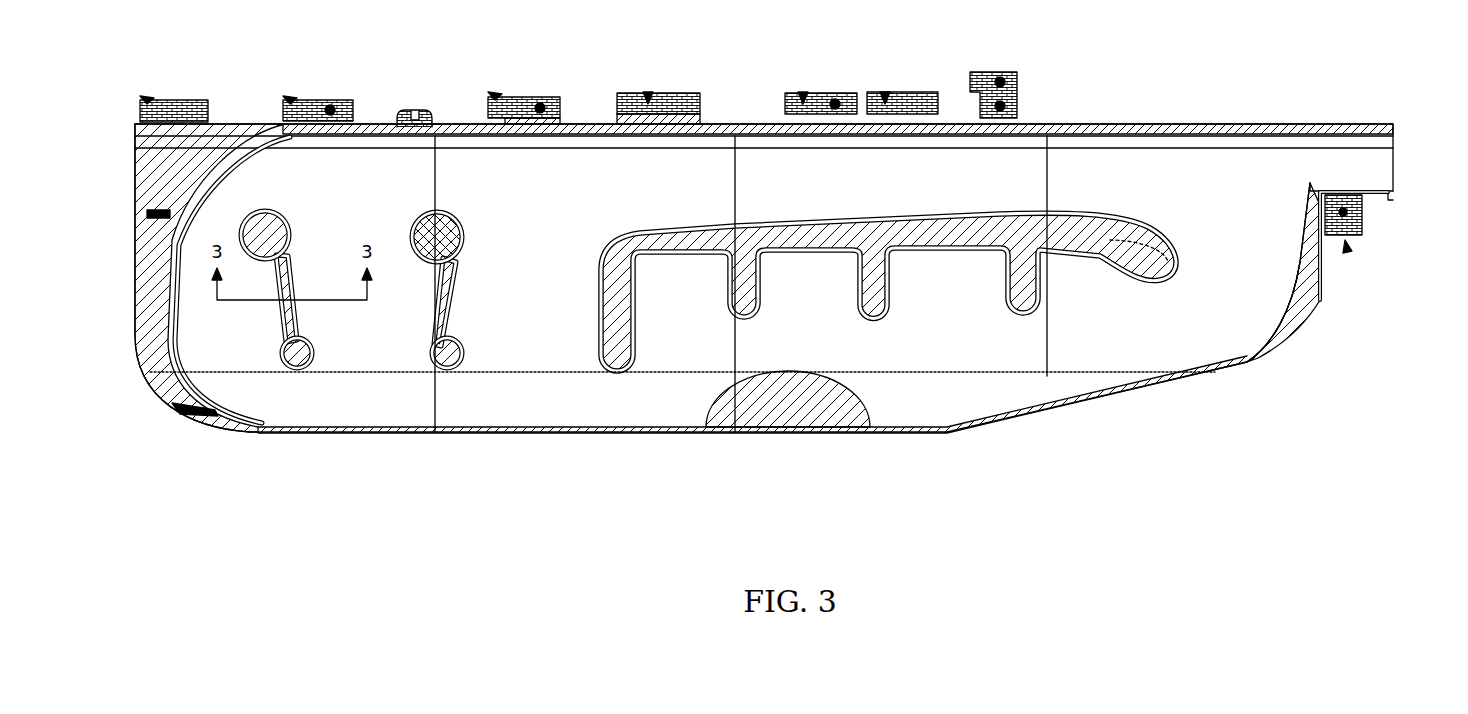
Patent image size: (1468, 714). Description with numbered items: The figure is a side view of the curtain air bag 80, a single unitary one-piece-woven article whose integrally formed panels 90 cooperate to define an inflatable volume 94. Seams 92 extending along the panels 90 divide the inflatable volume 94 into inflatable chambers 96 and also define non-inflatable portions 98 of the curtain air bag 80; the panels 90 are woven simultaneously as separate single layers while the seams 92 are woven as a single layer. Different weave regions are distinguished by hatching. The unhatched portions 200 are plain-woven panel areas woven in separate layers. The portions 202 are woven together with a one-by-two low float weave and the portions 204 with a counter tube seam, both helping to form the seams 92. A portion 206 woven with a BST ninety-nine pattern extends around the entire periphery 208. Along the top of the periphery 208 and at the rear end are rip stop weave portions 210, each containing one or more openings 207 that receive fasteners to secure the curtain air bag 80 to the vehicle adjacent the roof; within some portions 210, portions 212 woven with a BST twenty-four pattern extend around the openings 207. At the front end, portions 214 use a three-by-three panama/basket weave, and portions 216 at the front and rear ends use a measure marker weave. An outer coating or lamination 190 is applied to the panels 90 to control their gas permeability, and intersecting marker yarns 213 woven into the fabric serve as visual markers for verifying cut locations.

The curtain air bag 80 is at (1184, 404).
The integrally formed panels 90 is at (1233, 347).
The seams 92 is at (305, 345).
The inflatable volume 94 is at (538, 405).
The inflatable chambers 96 is at (250, 380).
The non-inflatable portions 98 is at (960, 216).
The outer coating and/or lamination 190 is at (812, 433).
The plain woven portions 200 is at (585, 284).
The low float weave portions 202 is at (292, 258).
The counter tube seam portions 204 is at (1178, 262).
The peripheral weave portion 206 is at (145, 318).
The openings 207 is at (143, 102).
The periphery 208 is at (1240, 124).
The rip stop weave portions 210 is at (165, 100).
The BST 24 weave portions 212 is at (338, 103).
The marker yarns 213 is at (1048, 322).
The panama/basket weave portions 214 is at (147, 213).
The measure marker weave portions 216 is at (150, 292).